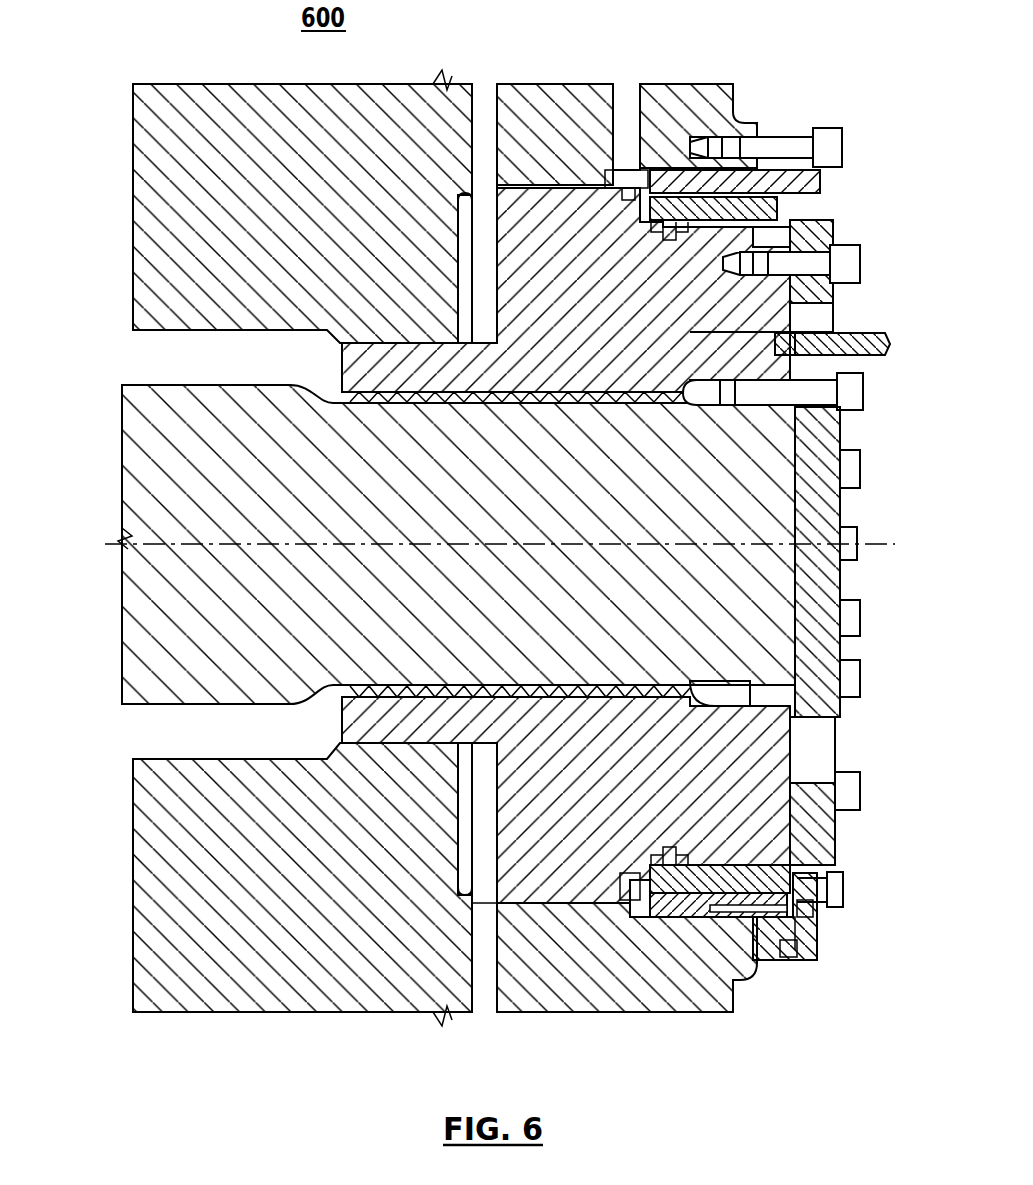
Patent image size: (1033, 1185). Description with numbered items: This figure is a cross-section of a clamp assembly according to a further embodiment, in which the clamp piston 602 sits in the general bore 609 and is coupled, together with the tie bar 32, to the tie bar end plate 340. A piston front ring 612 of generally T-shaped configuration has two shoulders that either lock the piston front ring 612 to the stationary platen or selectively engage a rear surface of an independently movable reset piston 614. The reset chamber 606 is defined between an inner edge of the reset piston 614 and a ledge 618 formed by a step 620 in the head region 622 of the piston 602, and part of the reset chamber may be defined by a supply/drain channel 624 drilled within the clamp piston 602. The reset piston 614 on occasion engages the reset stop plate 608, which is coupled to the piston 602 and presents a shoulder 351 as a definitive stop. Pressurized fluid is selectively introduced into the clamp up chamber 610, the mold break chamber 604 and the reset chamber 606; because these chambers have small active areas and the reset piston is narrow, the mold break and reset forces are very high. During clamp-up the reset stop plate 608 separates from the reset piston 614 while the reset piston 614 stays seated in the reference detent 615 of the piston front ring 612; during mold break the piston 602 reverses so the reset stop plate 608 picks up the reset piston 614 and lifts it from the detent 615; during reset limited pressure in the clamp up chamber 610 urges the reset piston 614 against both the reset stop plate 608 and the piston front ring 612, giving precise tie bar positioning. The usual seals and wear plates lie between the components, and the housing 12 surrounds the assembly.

The housing 12 is at (235, 985).
The tie bar 32 is at (130, 655).
The tie bar end plate 340 is at (835, 525).
The shoulder 351 is at (862, 268).
The piston 602 is at (550, 370).
The mold break chamber 604 is at (655, 162).
The reset chamber 606 is at (670, 232).
The reset stop plate 608 is at (840, 252).
The bore 609 is at (496, 938).
The clamp up chamber 610 is at (462, 214).
The piston front ring 612 is at (820, 186).
The reset piston 614 is at (760, 170).
The reference detent 615 is at (800, 214).
The ledge 618 is at (745, 900).
The step 620 is at (612, 165).
The head region 622 is at (588, 252).
The supply/drain channel 624 is at (698, 393).